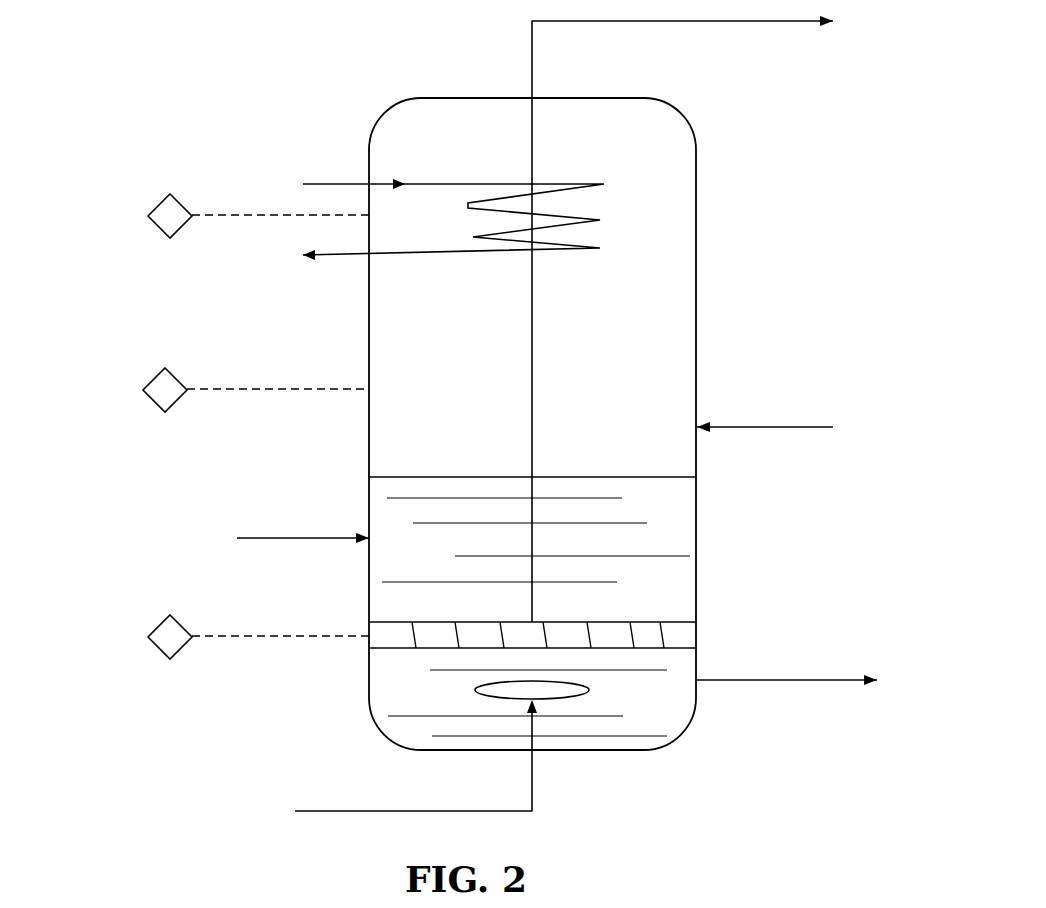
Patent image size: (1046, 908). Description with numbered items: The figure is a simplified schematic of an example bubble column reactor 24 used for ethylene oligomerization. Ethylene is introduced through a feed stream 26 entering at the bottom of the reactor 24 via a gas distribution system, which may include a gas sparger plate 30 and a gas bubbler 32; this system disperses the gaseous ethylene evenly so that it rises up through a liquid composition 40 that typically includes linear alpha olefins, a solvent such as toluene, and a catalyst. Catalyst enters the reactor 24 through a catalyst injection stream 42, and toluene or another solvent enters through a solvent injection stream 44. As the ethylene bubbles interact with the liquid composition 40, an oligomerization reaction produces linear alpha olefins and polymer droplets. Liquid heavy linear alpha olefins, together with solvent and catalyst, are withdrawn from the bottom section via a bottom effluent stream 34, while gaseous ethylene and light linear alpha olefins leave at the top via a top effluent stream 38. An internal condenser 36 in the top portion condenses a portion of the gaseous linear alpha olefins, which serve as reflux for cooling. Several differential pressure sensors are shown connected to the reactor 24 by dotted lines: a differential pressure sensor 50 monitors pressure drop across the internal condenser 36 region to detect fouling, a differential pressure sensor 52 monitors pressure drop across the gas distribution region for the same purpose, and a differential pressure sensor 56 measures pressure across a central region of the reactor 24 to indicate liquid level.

The bubble column reactor 24 is at (697, 220).
The feed stream 26 is at (400, 811).
The gas sparger plate 30 is at (660, 620).
The gas bubbler 32 is at (477, 688).
The bottom effluent stream 34 is at (747, 682).
The internal condenser 36 is at (417, 180).
The top effluent stream 38 is at (692, 21).
The liquid composition 40 is at (645, 558).
The catalyst injection stream 42 is at (340, 532).
The solvent injection stream 44 is at (743, 423).
The differential pressure sensor 50 is at (163, 198).
The differential pressure sensor 52 is at (160, 620).
The differential pressure sensor 56 is at (152, 378).